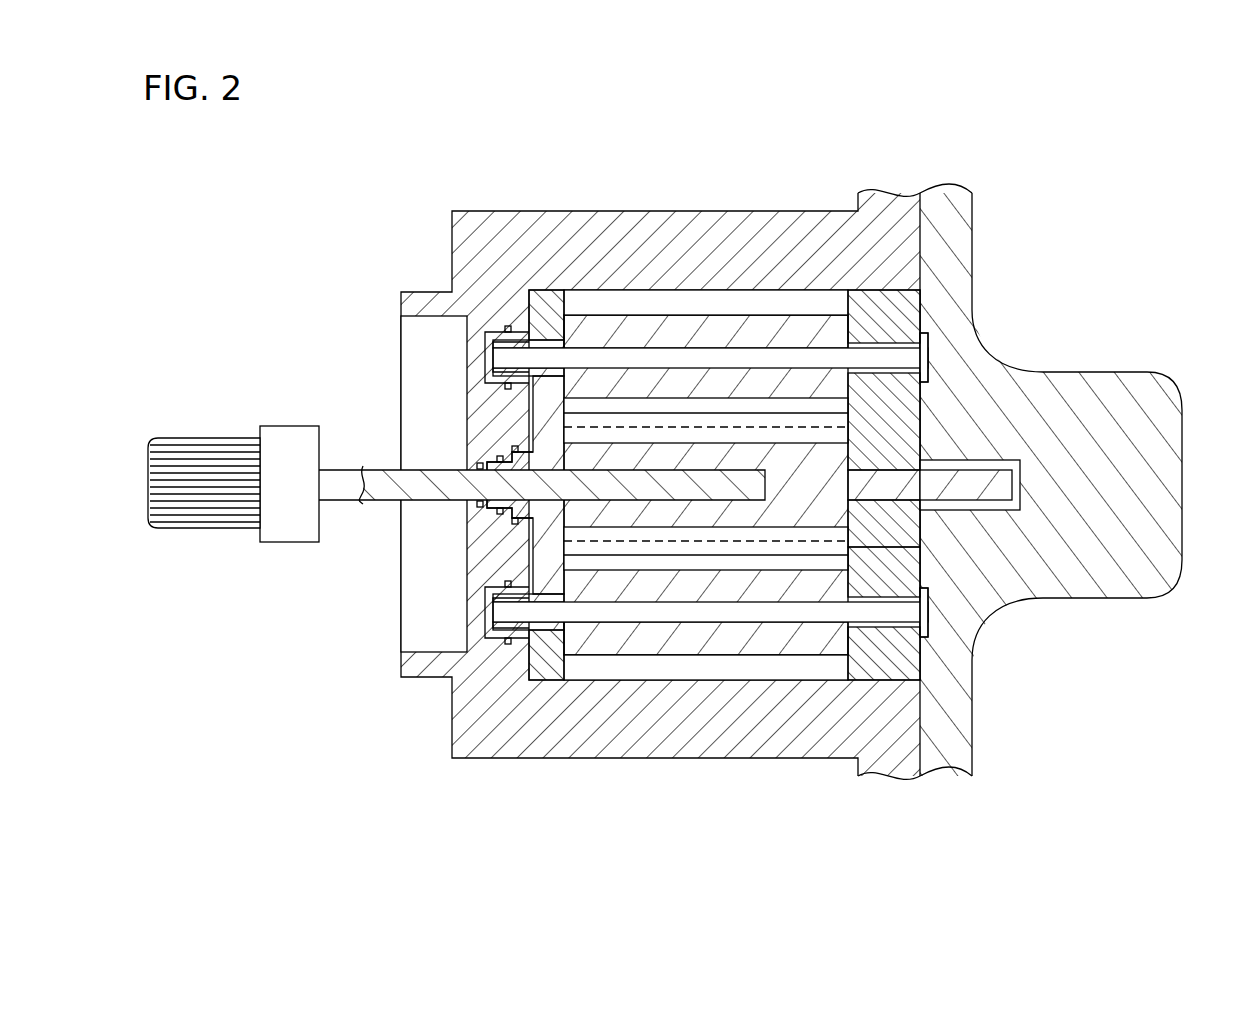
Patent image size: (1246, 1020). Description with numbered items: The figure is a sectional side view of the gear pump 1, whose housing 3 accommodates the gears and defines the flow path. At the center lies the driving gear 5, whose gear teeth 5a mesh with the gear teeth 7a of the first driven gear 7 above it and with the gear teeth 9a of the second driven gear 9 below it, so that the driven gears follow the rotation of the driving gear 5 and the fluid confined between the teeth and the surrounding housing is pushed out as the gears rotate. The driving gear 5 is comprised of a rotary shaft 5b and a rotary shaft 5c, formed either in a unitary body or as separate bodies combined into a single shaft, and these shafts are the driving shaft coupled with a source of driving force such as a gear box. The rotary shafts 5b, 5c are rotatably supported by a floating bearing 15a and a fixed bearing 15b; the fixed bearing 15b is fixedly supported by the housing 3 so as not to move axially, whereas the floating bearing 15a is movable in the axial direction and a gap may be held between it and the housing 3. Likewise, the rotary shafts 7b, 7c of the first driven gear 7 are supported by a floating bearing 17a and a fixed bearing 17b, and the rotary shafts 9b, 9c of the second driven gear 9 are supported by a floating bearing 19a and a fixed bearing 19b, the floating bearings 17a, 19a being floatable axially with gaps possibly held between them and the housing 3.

The gear pump 1 is at (617, 190).
The housing 3 is at (530, 210).
The driving gear 5 is at (780, 455).
The gear teeth 5a is at (735, 415).
The rotary shaft 5b is at (405, 502).
The rotary shaft 5c is at (1005, 490).
The first driven gear 7 is at (680, 330).
The gear teeth 7a is at (815, 295).
The rotary shaft 7b is at (498, 372).
The rotary shaft 7c is at (922, 345).
The second driven gear 9 is at (680, 643).
The gear teeth 9a is at (820, 678).
The rotary shaft 9b is at (503, 623).
The rotary shaft 9c is at (925, 632).
The floating bearing 15a is at (540, 438).
The fixed bearing 15b is at (905, 440).
The floating bearing 17a is at (553, 297).
The fixed bearing 17b is at (904, 312).
The floating bearing 19a is at (550, 677).
The fixed bearing 19b is at (902, 667).